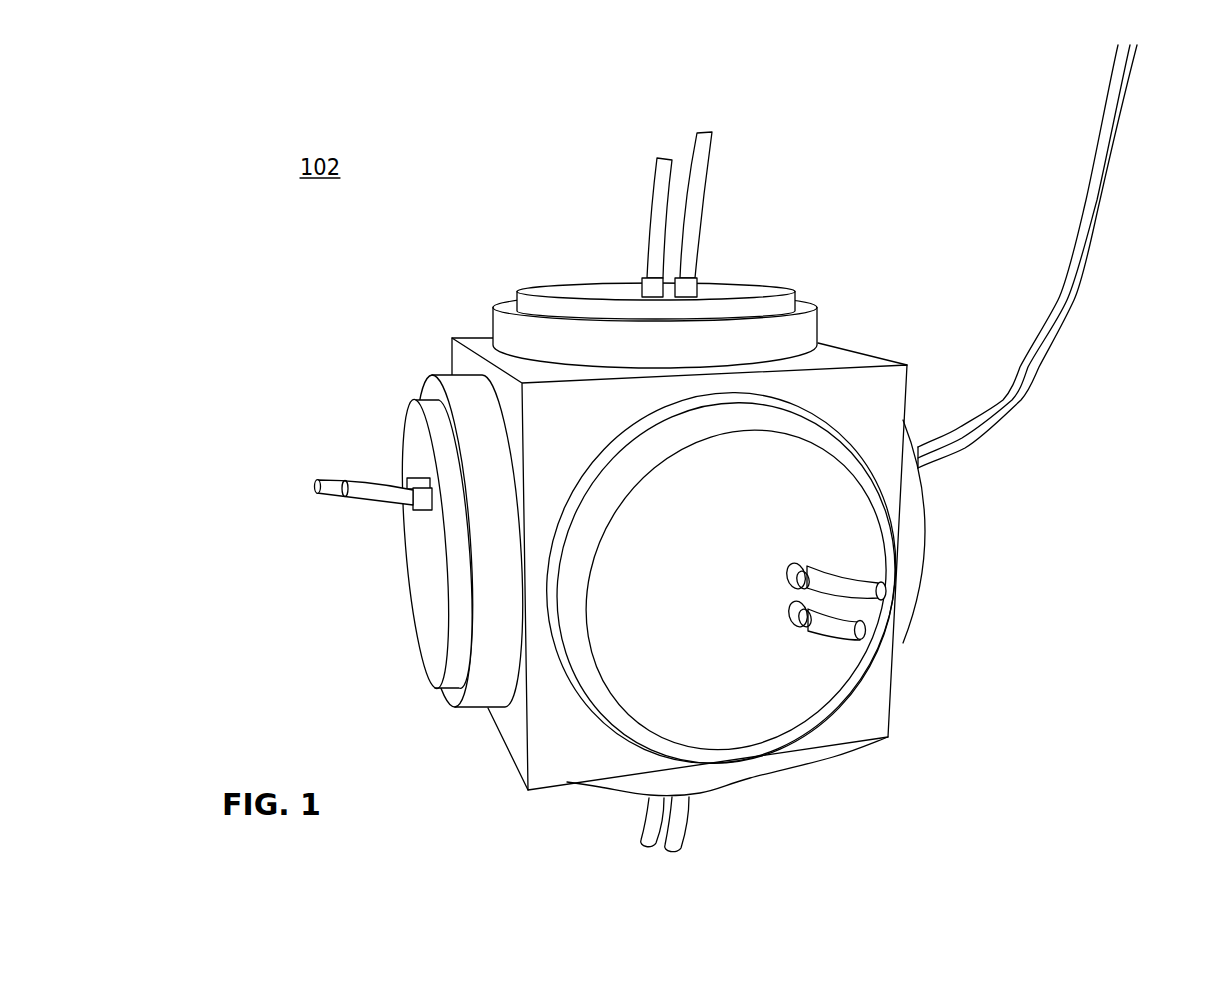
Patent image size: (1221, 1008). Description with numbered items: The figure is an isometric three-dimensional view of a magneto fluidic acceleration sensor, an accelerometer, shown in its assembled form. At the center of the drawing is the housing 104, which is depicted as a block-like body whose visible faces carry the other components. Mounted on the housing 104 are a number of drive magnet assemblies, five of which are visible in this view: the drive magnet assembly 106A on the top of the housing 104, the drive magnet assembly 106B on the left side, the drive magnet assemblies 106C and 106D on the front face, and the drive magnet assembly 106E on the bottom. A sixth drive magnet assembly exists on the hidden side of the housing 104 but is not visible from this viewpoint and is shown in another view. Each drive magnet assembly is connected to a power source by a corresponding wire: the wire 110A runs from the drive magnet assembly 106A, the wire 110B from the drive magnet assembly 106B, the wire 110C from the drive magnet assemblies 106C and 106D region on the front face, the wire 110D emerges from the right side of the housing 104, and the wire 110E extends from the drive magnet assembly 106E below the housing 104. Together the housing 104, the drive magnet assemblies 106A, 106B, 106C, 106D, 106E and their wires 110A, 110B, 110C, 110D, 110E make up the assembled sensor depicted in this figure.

The housing 104 is at (890, 719).
The drive magnet assembly 106A is at (818, 325).
The drive magnet assembly 106B is at (472, 712).
The drive magnet assembly 106C is at (878, 556).
The drive magnet assembly 106D is at (928, 586).
The drive magnet assembly 106E is at (752, 778).
The wire 110A is at (700, 200).
The wire 110B is at (368, 506).
The wire 110C is at (813, 640).
The wire 110D is at (1095, 210).
The wire 110E is at (645, 826).